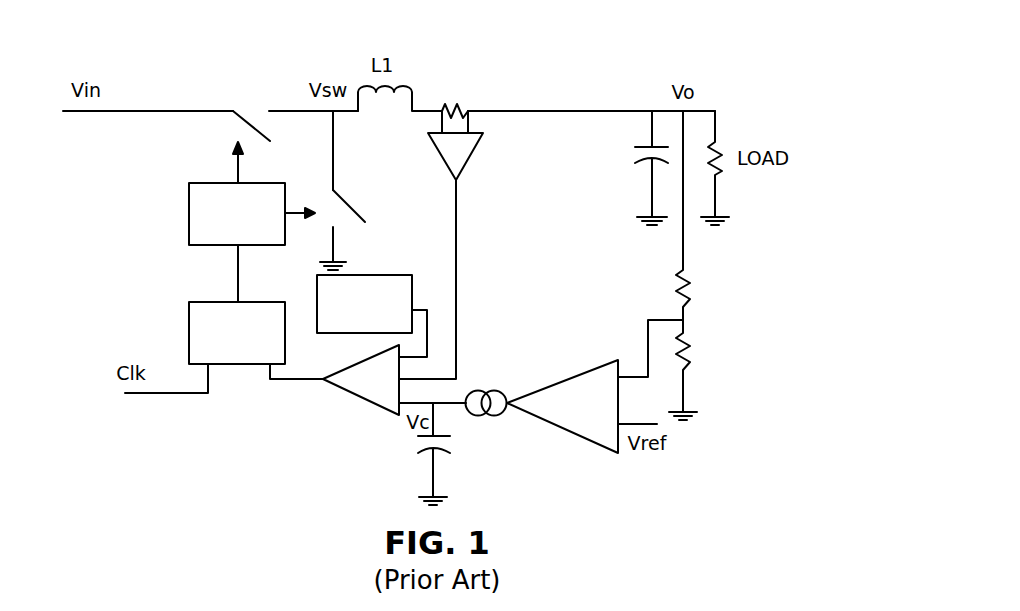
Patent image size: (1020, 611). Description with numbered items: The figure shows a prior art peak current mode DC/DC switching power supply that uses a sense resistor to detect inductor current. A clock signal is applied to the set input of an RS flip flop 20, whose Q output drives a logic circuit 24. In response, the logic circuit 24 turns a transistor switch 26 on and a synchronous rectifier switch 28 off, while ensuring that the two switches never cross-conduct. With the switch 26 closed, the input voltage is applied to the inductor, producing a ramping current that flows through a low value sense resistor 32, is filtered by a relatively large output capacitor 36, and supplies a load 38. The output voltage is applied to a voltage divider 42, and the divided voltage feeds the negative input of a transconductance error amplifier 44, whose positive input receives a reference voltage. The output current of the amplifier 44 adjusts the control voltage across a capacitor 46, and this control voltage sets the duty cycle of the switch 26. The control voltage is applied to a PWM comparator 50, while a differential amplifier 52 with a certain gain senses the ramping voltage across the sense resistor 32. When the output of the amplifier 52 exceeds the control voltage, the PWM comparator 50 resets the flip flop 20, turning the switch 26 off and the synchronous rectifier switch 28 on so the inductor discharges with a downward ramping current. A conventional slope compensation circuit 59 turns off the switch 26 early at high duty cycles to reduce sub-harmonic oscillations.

The RS flip flop 20 is at (237, 365).
The logic circuit 24 is at (218, 247).
The transistor switch 26 is at (243, 105).
The synchronous rectifier switch 28 is at (365, 203).
The sense resistor 32 is at (457, 93).
The output capacitor 36 is at (630, 152).
The load 38 is at (723, 147).
The voltage divider 42 is at (658, 288).
The transconductance error amplifier 44 is at (543, 385).
The capacitor 46 is at (410, 443).
The PWM comparator 50 is at (363, 400).
The differential amplifier 52 is at (477, 148).
The slope compensation circuit 59 is at (363, 273).